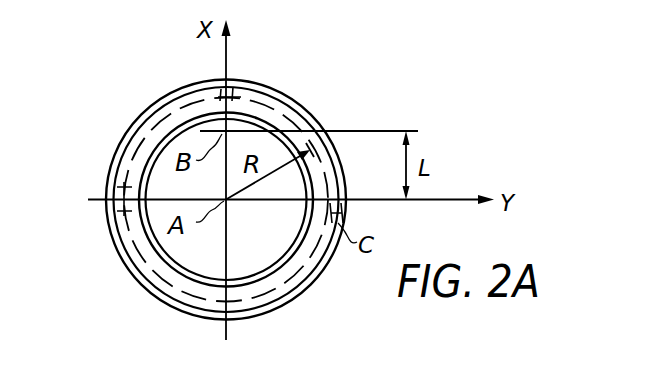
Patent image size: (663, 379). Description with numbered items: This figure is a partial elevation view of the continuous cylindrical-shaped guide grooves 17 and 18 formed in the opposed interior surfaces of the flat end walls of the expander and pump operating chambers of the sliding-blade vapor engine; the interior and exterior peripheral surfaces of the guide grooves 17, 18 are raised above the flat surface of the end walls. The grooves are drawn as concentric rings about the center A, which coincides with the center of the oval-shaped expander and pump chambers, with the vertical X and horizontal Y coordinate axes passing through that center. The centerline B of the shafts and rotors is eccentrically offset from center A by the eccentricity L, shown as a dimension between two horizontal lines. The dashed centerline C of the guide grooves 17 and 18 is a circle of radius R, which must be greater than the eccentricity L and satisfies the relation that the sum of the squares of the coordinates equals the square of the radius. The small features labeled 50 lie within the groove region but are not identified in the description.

The guide groove 17 is at (278, 96).
The guide groove 18 is at (226, 199).
The openings / slots 50 is at (212, 80).